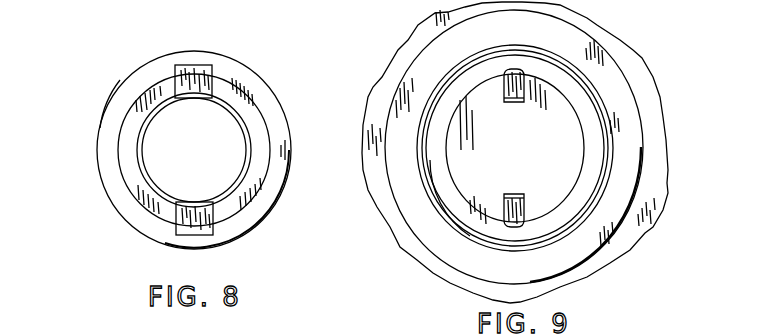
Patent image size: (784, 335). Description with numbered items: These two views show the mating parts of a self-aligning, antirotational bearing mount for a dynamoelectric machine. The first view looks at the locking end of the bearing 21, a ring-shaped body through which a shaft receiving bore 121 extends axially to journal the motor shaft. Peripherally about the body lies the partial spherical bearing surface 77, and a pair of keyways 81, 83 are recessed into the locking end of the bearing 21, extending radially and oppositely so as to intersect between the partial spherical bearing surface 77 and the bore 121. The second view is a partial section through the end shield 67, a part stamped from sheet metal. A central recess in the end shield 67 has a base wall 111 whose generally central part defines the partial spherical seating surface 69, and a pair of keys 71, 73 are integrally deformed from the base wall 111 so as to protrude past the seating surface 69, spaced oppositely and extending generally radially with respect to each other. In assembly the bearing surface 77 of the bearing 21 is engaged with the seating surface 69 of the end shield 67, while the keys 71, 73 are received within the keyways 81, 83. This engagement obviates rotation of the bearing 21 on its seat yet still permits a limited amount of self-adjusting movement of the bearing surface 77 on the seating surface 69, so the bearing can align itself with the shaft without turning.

In FIG. 8, the bearing 21 is at (249, 60).
In FIG. 8, the partial spherical bearing surface 77 is at (116, 108).
In FIG. 8, the partial spherical seating surface 69 is at (142, 183).
In FIG. 9, the partial spherical seating surface 69 is at (600, 72).
In FIG. 8, the shaft receiving bore 121 is at (141, 152).
In FIG. 8, the keyway 81 is at (190, 66).
In FIG. 8, the keyway 83 is at (193, 232).
In FIG. 9, the end shield 67 is at (590, 23).
In FIG. 9, the base wall 111 is at (570, 138).
In FIG. 9, the key 71 is at (502, 92).
In FIG. 9, the key 73 is at (525, 206).